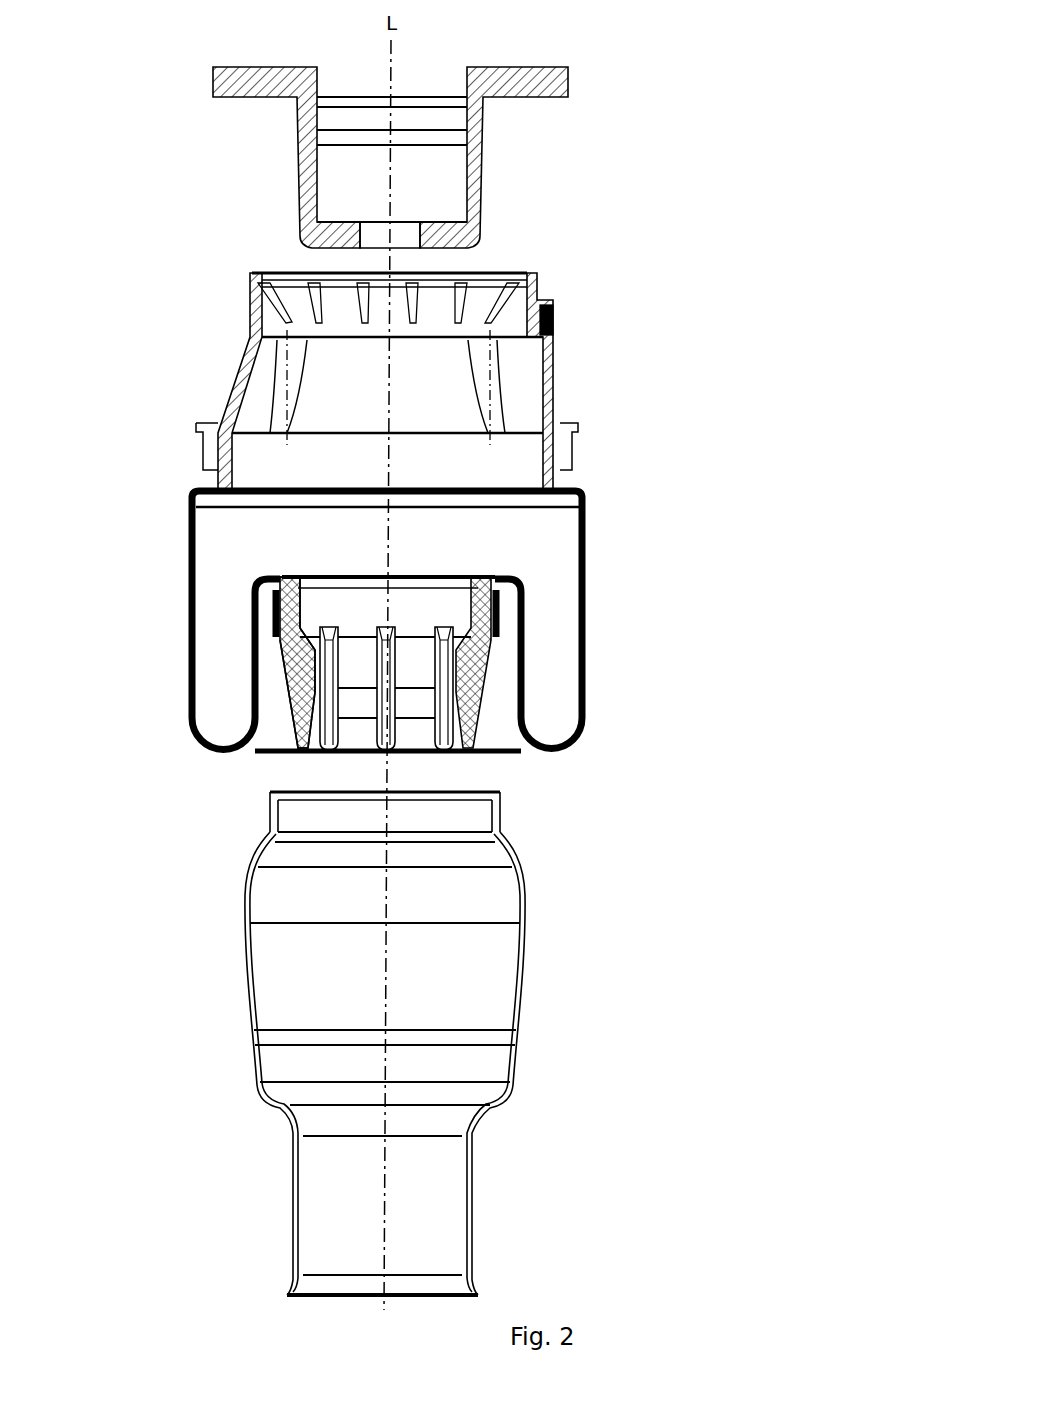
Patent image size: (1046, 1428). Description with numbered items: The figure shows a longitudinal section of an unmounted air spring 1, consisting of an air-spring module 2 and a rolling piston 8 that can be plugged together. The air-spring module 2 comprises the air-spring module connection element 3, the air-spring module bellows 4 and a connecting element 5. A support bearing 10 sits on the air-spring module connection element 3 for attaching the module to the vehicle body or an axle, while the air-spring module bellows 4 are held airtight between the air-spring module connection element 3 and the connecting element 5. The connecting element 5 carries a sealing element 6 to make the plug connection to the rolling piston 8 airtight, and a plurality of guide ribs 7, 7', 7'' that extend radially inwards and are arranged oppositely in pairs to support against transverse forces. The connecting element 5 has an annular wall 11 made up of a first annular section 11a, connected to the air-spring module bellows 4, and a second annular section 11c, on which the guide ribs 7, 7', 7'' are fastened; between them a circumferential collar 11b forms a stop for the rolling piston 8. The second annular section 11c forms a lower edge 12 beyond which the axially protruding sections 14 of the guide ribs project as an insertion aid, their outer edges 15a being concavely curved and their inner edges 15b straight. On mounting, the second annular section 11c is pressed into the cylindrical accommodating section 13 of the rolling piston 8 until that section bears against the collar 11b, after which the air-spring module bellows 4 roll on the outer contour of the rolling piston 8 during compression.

The air spring 1 is at (703, 210).
The air-spring module 2 is at (765, 770).
The air-spring module connection element 3 is at (555, 370).
The air-spring module bellows 4 is at (588, 527).
The connecting element 5 is at (485, 672).
The sealing element 6 is at (503, 650).
The guide rib 7 is at (531, 750).
The guide rib 7' is at (558, 798).
The guide rib 7'' is at (259, 766).
The rolling piston 8 is at (518, 975).
The support bearing 10 is at (570, 80).
The wall 11 is at (330, 607).
The first annular section 11a is at (267, 612).
The circumferential collar 11b is at (272, 633).
The second annular section 11c is at (280, 670).
The lower edge 12 is at (353, 687).
The accommodating section 13 is at (500, 815).
The axially protruding sections 14 is at (433, 750).
The outer edges 15a is at (283, 708).
The inner edges 15b is at (397, 680).